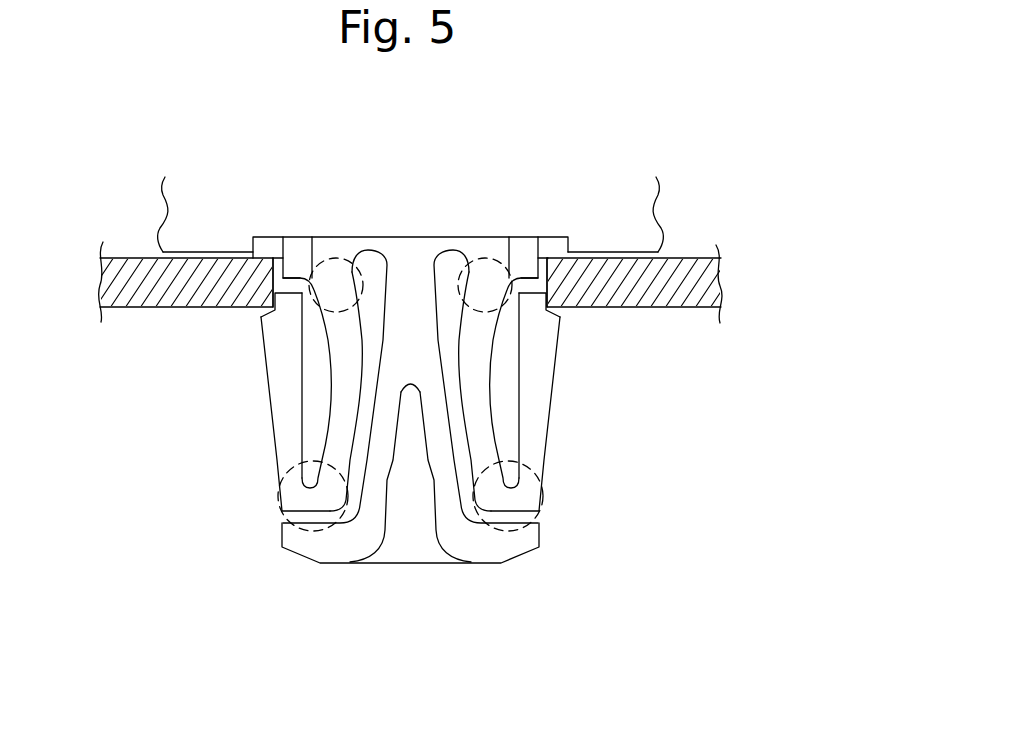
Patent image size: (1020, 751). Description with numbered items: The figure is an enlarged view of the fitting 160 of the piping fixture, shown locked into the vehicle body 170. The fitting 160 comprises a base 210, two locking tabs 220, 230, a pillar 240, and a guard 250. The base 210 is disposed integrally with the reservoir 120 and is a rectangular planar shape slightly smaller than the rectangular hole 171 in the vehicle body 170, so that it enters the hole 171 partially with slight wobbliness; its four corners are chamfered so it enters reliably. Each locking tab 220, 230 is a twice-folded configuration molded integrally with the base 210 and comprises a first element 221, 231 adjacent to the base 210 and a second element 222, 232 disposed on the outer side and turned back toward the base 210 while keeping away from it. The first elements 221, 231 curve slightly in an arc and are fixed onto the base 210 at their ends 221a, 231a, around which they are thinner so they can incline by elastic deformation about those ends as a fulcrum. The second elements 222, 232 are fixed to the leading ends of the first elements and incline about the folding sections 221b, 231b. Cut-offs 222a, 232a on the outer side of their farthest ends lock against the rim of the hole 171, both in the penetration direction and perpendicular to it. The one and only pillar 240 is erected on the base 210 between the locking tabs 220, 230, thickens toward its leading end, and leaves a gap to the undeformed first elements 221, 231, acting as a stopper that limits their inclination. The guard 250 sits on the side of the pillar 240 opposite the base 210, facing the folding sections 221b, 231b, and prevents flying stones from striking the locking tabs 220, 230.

The reservoir 120 is at (197, 253).
The fitting 160 is at (404, 383).
The vehicle body 170 is at (716, 245).
The hole 171 is at (543, 274).
The base 210 is at (495, 247).
The locking tab 220 is at (229, 358).
The first element 221 is at (337, 432).
The end of first element 221a is at (333, 258).
The folding section 221b is at (260, 507).
The second element 222 is at (283, 395).
The cut-off 222a is at (272, 306).
The locking tab 230 is at (573, 351).
The first element 231 is at (478, 417).
The end of first element 231a is at (488, 258).
The folding section 231b is at (542, 497).
The second element 232 is at (530, 382).
The cut-off 232a is at (558, 296).
The pillar 240 is at (400, 357).
The guard 250 is at (340, 552).